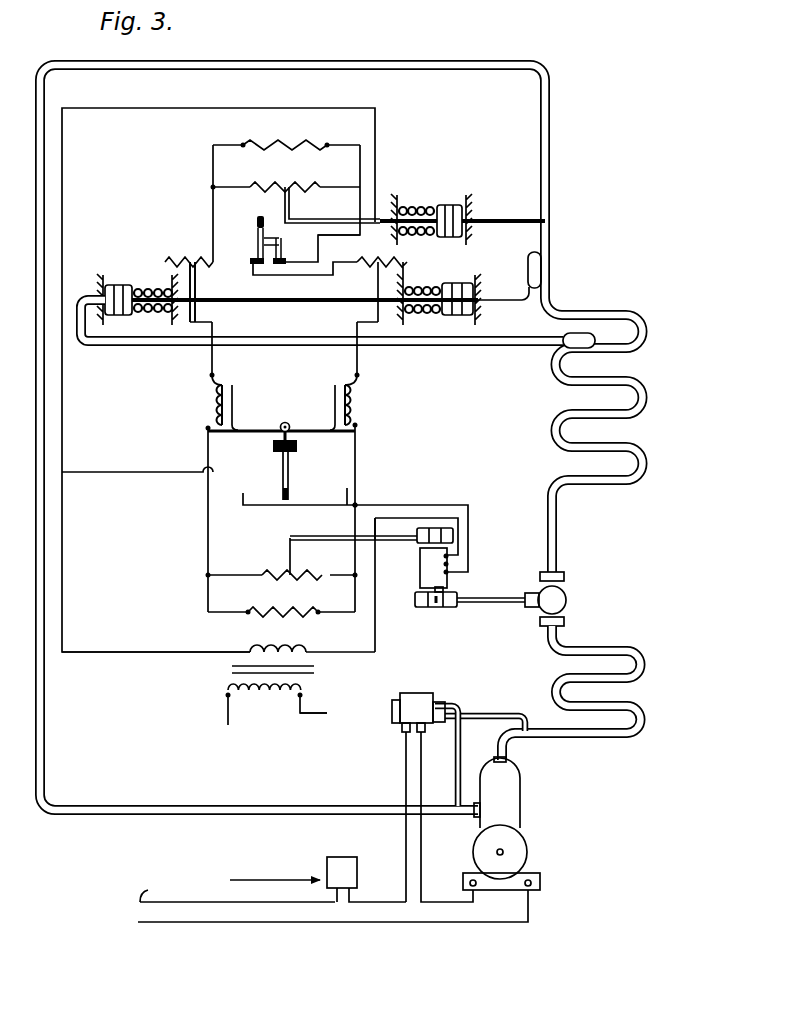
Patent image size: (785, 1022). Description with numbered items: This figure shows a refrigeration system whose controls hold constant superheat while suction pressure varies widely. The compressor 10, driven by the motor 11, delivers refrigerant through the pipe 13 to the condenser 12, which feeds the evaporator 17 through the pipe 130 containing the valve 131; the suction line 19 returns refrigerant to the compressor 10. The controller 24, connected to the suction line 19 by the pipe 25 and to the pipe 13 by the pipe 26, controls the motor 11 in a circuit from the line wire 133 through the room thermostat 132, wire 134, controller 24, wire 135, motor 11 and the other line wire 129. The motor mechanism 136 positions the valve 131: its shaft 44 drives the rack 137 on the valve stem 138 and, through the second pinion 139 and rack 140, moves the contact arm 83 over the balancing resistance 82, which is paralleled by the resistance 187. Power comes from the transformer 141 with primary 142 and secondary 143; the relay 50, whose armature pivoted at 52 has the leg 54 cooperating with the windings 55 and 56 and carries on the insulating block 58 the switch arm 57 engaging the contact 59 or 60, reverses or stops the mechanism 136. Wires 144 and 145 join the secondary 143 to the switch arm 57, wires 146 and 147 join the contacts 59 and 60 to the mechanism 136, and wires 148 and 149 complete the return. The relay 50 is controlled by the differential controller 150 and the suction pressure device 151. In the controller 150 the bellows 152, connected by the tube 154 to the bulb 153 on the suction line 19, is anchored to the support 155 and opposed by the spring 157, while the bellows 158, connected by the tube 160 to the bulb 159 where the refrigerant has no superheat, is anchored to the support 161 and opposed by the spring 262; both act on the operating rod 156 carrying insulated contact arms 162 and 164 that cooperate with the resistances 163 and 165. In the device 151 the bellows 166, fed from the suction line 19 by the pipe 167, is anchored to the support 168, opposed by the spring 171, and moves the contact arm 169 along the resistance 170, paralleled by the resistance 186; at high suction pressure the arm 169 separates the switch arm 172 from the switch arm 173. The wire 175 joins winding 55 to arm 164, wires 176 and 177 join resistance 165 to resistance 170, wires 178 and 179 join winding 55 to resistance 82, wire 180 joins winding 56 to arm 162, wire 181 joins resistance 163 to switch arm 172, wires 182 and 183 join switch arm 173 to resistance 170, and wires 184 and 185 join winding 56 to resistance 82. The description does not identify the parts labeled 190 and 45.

The suction line 19 is at (458, 66).
The evaporator 17 is at (622, 383).
The pipe 130 is at (557, 546).
The valve 131 is at (566, 597).
The condenser 12 is at (600, 680).
The pipe 13 is at (549, 738).
The pipe 26 is at (495, 713).
The pipe 25 is at (456, 752).
The switching mechanism 24 is at (418, 697).
The compressor 10 is at (504, 795).
The compressor motor 11 is at (520, 850).
The wire 134 is at (406, 847).
The wire 135 is at (421, 853).
The line wire 129 is at (283, 923).
The line wire 133 is at (236, 884).
The room thermostat 132 is at (340, 868).
The control circuit enclosure 190 is at (247, 108).
The low voltage secondary 143 is at (290, 647).
The transformer 141 is at (222, 670).
The high voltage primary 142 is at (262, 697).
The wire 144 is at (118, 652).
The wire 149 is at (375, 637).
The wire 145 is at (150, 473).
The resistance 186 is at (296, 143).
The wire 176 is at (213, 204).
The wire 177 is at (234, 183).
The resistance 170 is at (278, 185).
The wire 183 is at (355, 183).
The contact arm 169 is at (308, 221).
The wire 182 is at (318, 246).
The switch arm 172 is at (257, 232).
The switch arm 173 is at (284, 246).
The wire 181 is at (268, 276).
The contact arm 162 is at (365, 280).
The suction pressure device 151 is at (432, 175).
The pipe 167 is at (504, 218).
The resistance 163 is at (406, 258).
The spring 171 is at (418, 208).
The bellows 166 is at (448, 204).
The support 168 is at (470, 200).
The differential controller 150 is at (466, 275).
The spring 157 is at (420, 288).
The bellows 152 is at (444, 316).
The fixed support 155 is at (478, 314).
The tube 154 is at (506, 303).
The bulb 153 is at (527, 262).
The operating rod 156 is at (306, 304).
The contact arm 164 is at (196, 282).
The resistance 165 is at (188, 260).
The support 161 is at (104, 272).
The bellows 158 is at (125, 284).
The spring 262 is at (146, 315).
The connecting tube 160 is at (130, 344).
The controlling bulb 159 is at (582, 340).
The relay mechanism 50 is at (285, 400).
The wire 175 is at (214, 358).
The wire 180 is at (360, 358).
The winding 55 is at (218, 403).
The winding 56 is at (348, 394).
The leg 54 is at (349, 418).
The pivot 52 is at (291, 422).
The insulating block 58 is at (298, 448).
The switch arm 57 is at (290, 489).
The wire 184 is at (358, 452).
The contact 59 is at (280, 493).
The contact 60 is at (347, 488).
The wire 146 is at (266, 507).
The wire 178 is at (206, 534).
The balancing resistance 82 is at (284, 577).
The wire 179 is at (240, 575).
The wire 185 is at (330, 575).
The resistance 187 is at (264, 618).
The contact arm 83 is at (288, 544).
The wire 148 is at (375, 522).
The rack 140 is at (418, 542).
The second pinion 139 is at (448, 526).
The wire 147 is at (442, 520).
The electric motor mechanism 136 is at (420, 572).
The main operating shaft 44 is at (446, 592).
The rack 137 is at (418, 608).
The plunger 45 is at (438, 606).
The valve stem 138 is at (488, 606).